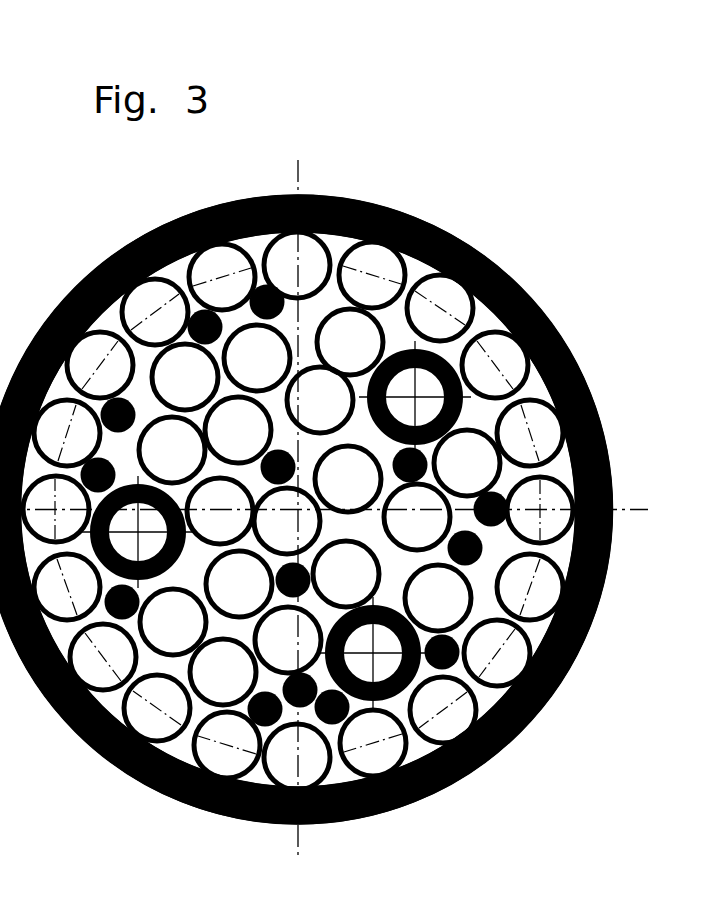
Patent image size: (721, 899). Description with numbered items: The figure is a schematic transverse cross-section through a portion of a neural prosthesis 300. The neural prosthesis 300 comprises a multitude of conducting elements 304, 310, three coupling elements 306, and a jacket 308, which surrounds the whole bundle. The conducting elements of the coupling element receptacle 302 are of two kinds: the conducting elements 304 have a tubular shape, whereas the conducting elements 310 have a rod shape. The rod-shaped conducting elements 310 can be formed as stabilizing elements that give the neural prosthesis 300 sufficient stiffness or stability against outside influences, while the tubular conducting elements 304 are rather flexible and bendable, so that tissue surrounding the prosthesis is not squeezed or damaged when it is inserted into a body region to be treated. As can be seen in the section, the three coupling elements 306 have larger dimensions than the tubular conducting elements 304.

The neural prosthesis 300 is at (514, 143).
The coupling element receptacle 302 is at (482, 410).
The conducting elements 304 is at (488, 258).
The coupling elements 306 is at (487, 760).
The jacket 308 is at (378, 207).
The conducting elements 310 is at (603, 571).